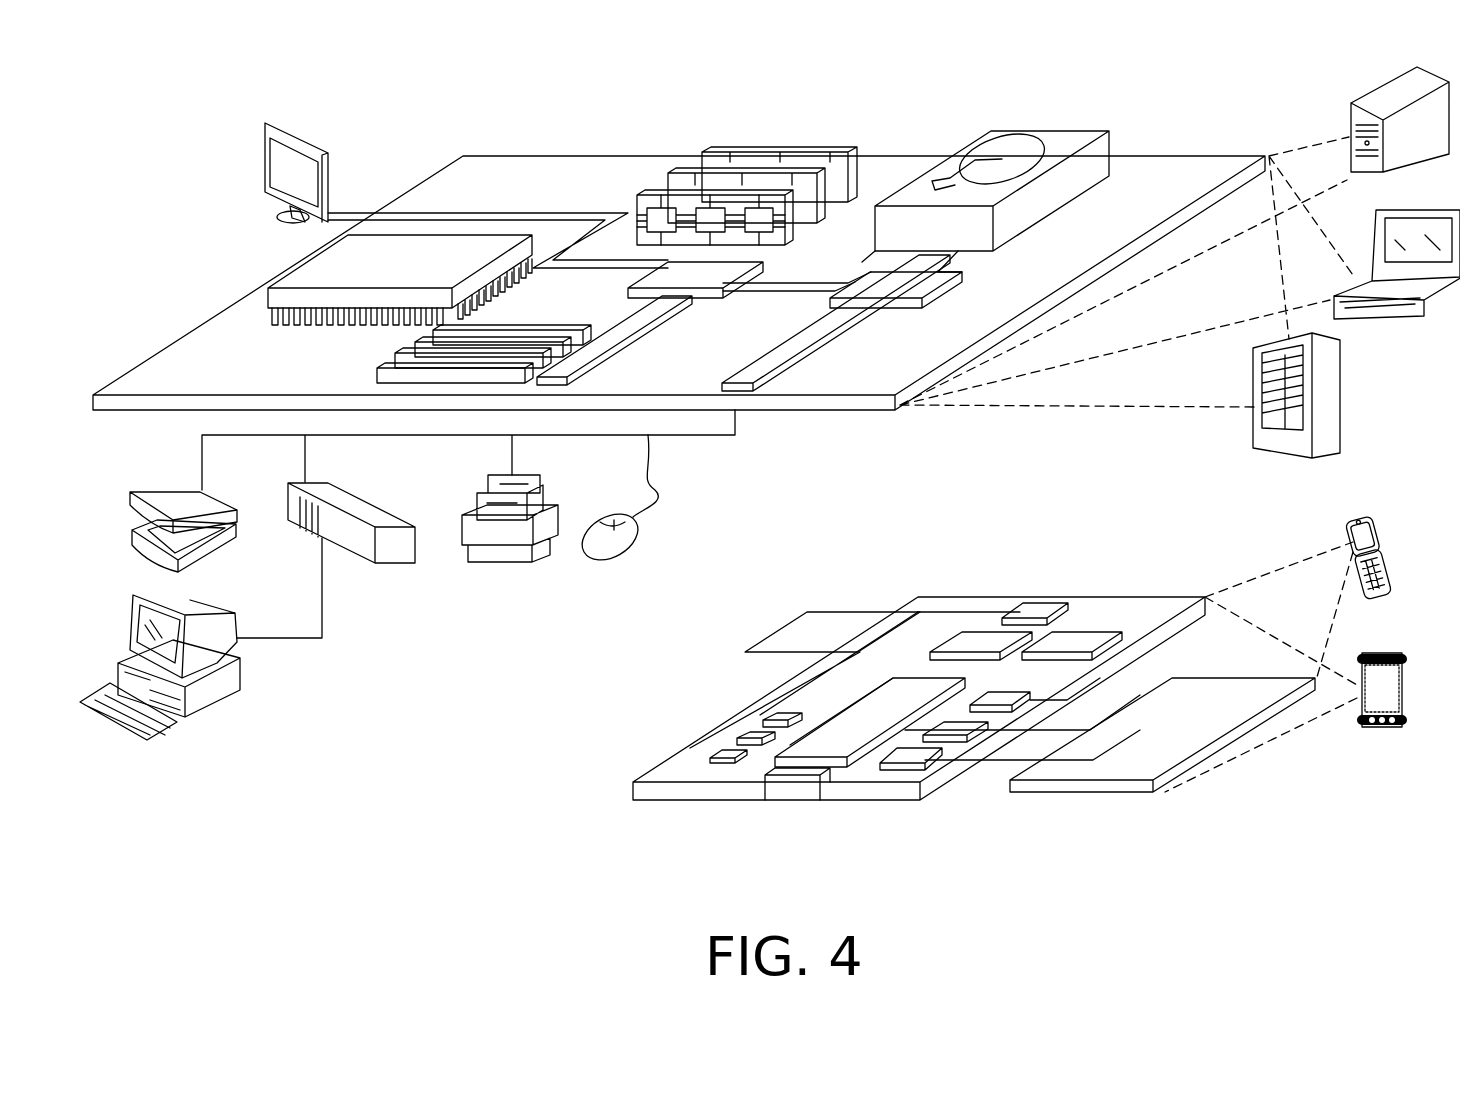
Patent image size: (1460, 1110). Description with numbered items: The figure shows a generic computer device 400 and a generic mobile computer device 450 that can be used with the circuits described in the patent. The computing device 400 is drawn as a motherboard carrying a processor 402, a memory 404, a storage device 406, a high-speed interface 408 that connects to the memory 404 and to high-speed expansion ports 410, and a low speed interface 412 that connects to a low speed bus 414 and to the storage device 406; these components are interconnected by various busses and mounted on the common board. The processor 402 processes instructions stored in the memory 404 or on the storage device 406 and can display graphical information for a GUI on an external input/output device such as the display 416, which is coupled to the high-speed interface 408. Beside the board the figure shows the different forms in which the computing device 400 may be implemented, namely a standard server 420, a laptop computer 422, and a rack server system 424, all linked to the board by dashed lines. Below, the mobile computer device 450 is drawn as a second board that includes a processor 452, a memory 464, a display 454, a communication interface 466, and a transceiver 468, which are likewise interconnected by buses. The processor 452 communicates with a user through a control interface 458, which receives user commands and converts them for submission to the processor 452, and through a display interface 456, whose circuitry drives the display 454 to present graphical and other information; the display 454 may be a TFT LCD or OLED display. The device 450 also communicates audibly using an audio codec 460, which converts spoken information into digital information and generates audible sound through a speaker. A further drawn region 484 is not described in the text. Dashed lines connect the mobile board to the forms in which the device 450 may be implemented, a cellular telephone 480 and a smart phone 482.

The computing device 400 is at (770, 399).
The processor 402 is at (296, 268).
The memory 404 is at (783, 148).
The storage device 406 is at (1040, 130).
The high-speed interface 408 is at (710, 272).
The high-speed expansion ports 410 is at (405, 352).
The low speed interface 412 is at (868, 280).
The low speed bus 414 is at (745, 380).
The display 416 is at (272, 122).
The standard server 420 is at (1375, 95).
The laptop computer 422 is at (1435, 210).
The rack server system 424 is at (1342, 399).
The mobile computer device 450 is at (1034, 669).
The processor 452 is at (836, 728).
The display 454 is at (1203, 694).
The display interface 456 is at (932, 758).
The control interface 458 is at (962, 727).
The audio codec 460 is at (1003, 697).
The memory 464 is at (742, 742).
The communication interface 466 is at (982, 634).
The transceiver 468 is at (1080, 634).
The cellular telephone 480 is at (1037, 607).
The smart phone 482 is at (897, 610).
The battery 484 is at (808, 610).